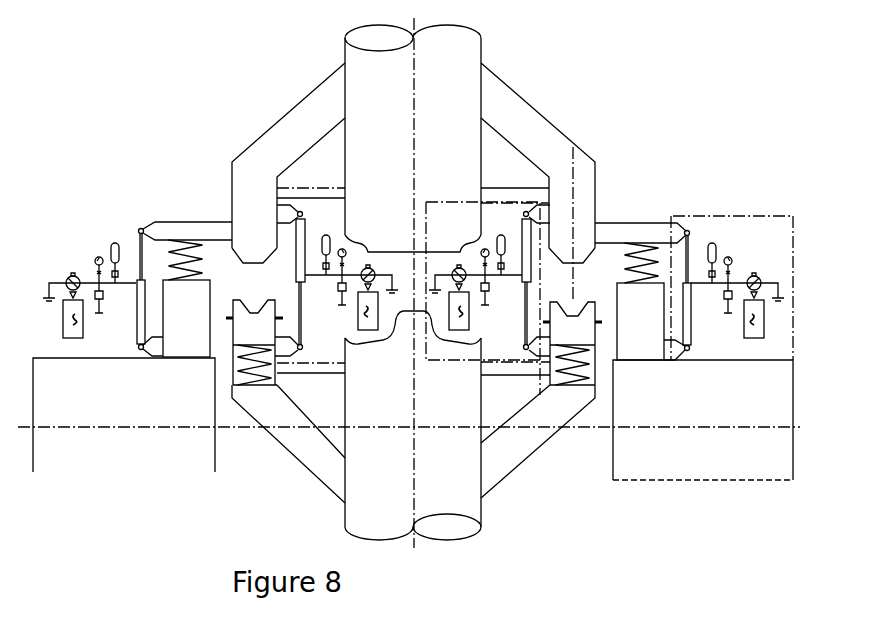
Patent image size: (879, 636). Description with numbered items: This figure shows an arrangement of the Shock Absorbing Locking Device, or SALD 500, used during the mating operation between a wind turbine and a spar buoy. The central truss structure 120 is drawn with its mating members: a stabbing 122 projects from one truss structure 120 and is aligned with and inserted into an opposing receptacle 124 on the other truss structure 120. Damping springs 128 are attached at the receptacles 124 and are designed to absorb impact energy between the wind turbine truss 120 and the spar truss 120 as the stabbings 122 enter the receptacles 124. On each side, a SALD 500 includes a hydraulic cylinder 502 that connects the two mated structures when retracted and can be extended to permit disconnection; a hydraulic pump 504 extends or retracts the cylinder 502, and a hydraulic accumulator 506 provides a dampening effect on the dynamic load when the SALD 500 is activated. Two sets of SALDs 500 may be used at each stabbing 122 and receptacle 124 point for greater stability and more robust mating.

The truss structure 120 is at (310, 123).
The stabbing 122 is at (257, 252).
The receptacle 124 is at (243, 328).
The damping spring 128 is at (165, 252).
The shock absorbing locking device 500 is at (75, 187).
The hydraulic cylinder 502 is at (130, 320).
The hydraulic pump 504 is at (60, 323).
The hydraulic accumulator 506 is at (92, 260).